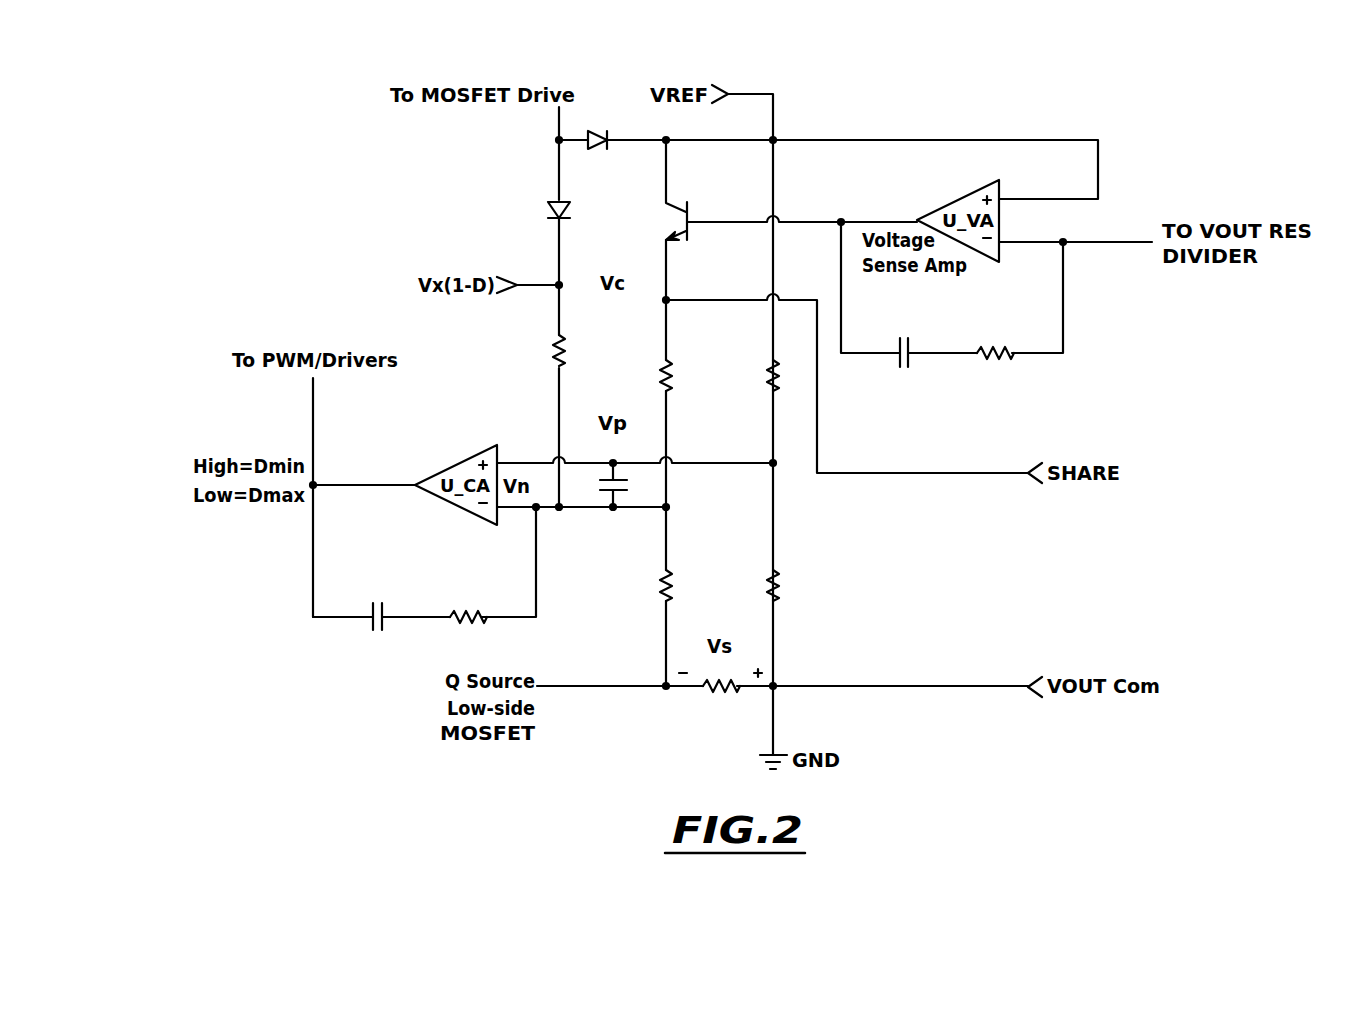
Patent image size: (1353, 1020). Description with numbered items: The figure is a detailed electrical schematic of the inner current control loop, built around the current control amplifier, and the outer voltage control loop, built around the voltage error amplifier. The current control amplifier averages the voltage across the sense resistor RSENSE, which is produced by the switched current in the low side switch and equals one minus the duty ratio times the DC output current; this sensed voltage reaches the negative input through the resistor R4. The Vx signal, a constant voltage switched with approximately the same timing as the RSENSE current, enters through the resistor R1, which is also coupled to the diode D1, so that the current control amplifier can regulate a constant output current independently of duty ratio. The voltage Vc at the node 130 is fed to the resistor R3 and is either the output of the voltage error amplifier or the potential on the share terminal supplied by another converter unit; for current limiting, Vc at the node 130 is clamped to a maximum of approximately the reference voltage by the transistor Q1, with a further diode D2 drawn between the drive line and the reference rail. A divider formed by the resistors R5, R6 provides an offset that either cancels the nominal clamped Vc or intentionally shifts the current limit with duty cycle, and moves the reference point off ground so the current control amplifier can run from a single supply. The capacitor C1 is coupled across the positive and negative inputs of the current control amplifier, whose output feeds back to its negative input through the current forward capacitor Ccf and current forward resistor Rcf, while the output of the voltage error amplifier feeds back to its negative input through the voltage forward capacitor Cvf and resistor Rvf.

The node 130 is at (666, 300).
The transistor Q1 is at (662, 220).
The diode D1 is at (542, 210).
The diode D2 is at (600, 153).
The resistor R1 is at (543, 350).
The resistor R3 is at (650, 375).
The resistor R4 is at (650, 585).
The resistor R5 is at (757, 375).
The resistor R6 is at (758, 585).
The capacitor C1 is at (599, 485).
The current forward capacitor Ccf is at (376, 605).
The current forward resistor Rcf is at (469, 607).
The voltage forward capacitor Cvf is at (904, 341).
The current forward resistor Rvf is at (996, 343).
The sense resistor RSENSE is at (719, 698).